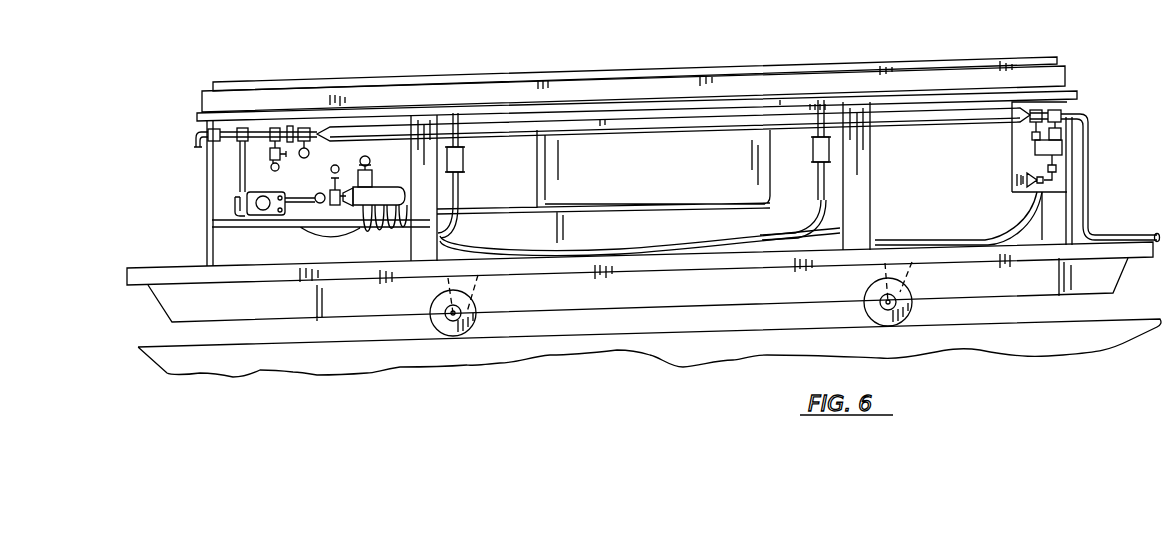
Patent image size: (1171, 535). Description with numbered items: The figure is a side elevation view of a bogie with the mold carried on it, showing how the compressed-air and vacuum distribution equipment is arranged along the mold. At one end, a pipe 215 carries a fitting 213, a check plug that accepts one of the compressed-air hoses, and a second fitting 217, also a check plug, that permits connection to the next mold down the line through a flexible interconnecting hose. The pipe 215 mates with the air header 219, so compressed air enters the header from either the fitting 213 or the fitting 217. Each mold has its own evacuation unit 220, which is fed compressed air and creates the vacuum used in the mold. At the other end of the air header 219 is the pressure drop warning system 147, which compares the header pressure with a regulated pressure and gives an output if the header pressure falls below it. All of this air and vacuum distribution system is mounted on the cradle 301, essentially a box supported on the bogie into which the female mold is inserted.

The pressure drop warning system 147 is at (1062, 146).
The fitting 213 is at (272, 167).
The pipe 215 is at (260, 132).
The second fitting 217 is at (196, 142).
The air header 219 is at (550, 127).
The evacuation unit 220 is at (318, 185).
The cradle 301 is at (1067, 103).